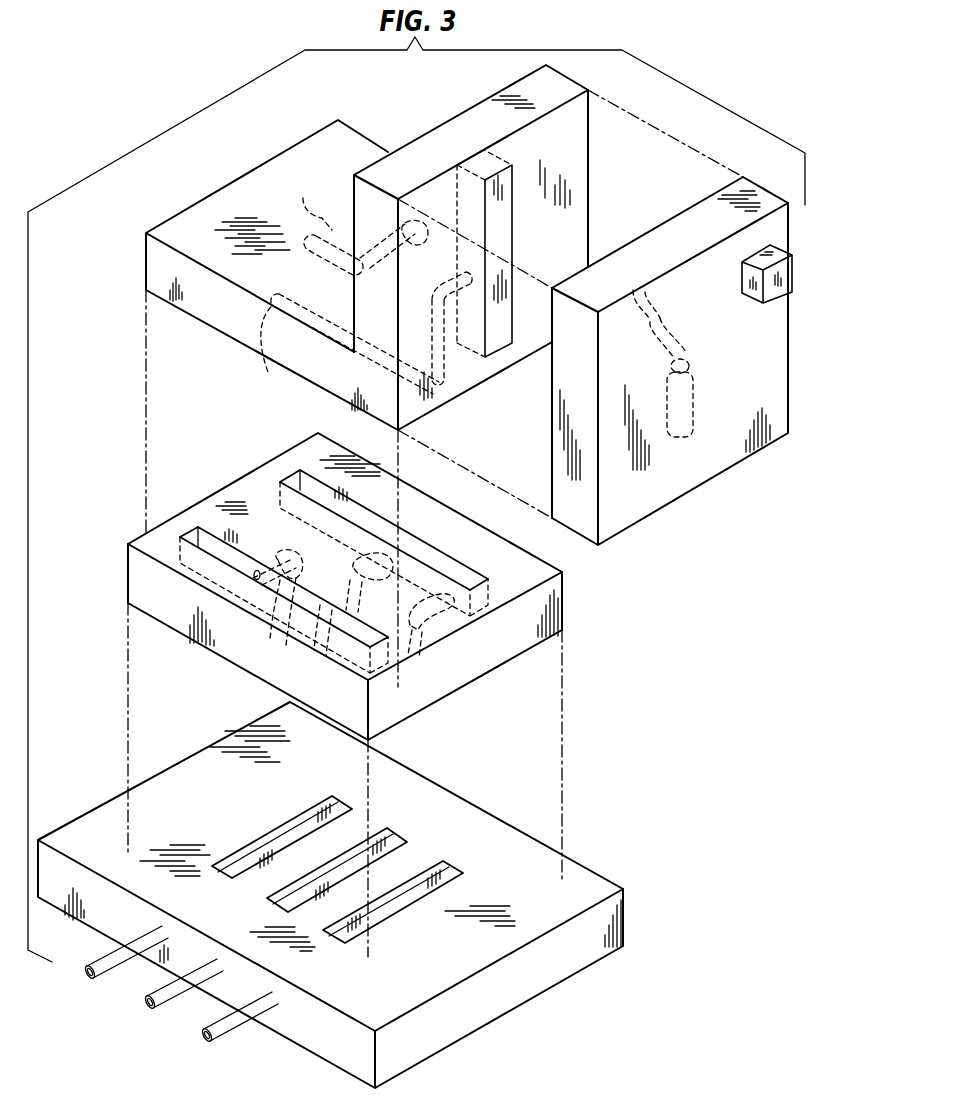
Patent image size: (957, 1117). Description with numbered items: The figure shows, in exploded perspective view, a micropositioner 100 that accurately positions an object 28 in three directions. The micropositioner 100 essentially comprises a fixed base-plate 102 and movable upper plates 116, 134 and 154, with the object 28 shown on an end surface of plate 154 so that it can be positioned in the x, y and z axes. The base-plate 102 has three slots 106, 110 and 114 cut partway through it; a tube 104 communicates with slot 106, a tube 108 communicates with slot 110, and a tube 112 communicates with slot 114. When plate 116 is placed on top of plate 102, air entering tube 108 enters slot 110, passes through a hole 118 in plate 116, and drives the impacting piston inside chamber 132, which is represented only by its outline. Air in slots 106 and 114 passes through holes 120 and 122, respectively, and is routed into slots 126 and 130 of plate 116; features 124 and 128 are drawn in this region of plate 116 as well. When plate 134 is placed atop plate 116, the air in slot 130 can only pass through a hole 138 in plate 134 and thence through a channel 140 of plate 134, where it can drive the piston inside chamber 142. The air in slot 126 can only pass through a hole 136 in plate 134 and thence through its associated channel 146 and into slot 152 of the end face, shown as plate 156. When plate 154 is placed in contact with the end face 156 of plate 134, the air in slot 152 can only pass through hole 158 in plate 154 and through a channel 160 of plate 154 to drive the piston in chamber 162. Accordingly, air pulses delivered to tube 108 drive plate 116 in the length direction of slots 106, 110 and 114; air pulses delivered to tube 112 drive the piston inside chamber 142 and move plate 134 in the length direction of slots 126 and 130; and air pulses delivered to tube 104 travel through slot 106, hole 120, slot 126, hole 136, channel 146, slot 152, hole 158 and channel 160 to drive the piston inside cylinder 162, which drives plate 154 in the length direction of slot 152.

The micropositioner 100 is at (283, 120).
The base-plate 102 is at (583, 882).
The tube 104 is at (90, 980).
The slot 106 is at (300, 817).
The tube 108 is at (150, 1010).
The slot 110 is at (400, 835).
The tube 112 is at (207, 1045).
The slot 114 is at (457, 870).
The upper plate 116 is at (400, 705).
The hole 118 is at (317, 645).
The hole 120 is at (272, 640).
The hole 122 is at (431, 653).
The channel 124 is at (277, 553).
The slot 126 is at (217, 543).
The channel 128 is at (447, 646).
The slot 130 is at (465, 570).
The chamber 132 is at (353, 561).
The upper plate 134 is at (220, 307).
The hole 136 is at (268, 372).
The hole 138 is at (433, 220).
The channel 140 is at (393, 193).
The chamber 142 is at (327, 225).
The channel 146 is at (387, 333).
The slot 152 is at (500, 228).
The upper plate 154 is at (697, 227).
The end face 156 is at (577, 148).
The hole 158 is at (633, 290).
The channel 160 is at (688, 346).
The chamber 162 is at (700, 395).
The object 28 is at (773, 290).